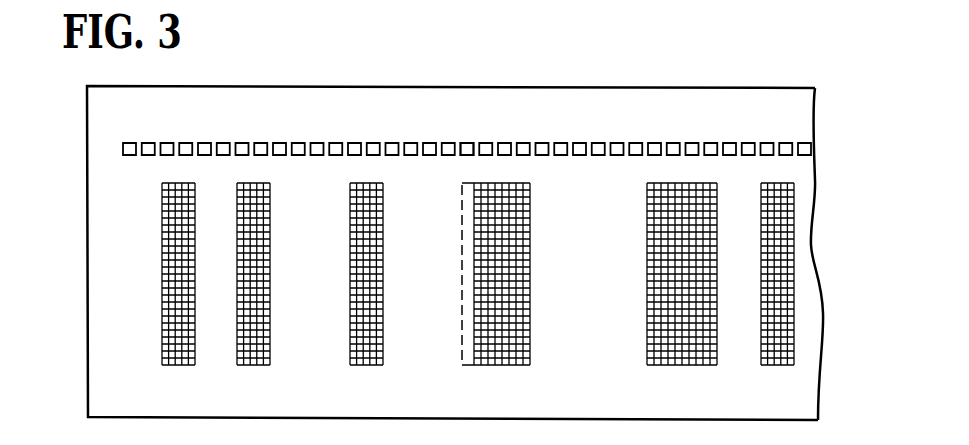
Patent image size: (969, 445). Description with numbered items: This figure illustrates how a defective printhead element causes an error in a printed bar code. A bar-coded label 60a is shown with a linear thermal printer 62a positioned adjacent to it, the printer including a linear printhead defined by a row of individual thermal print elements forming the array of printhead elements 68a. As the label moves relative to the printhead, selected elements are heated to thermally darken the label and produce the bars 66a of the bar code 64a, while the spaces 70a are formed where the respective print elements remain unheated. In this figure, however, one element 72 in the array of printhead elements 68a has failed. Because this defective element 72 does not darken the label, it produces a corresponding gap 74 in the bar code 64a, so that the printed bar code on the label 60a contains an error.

The bar-coded label 60a is at (820, 186).
The printer 62a is at (754, 130).
The bar code 64a is at (794, 367).
The bar 66a is at (518, 184).
The array of printhead elements 68a is at (185, 143).
The space 70a is at (419, 207).
The defective element 72 is at (468, 143).
The gap 74 is at (460, 278).